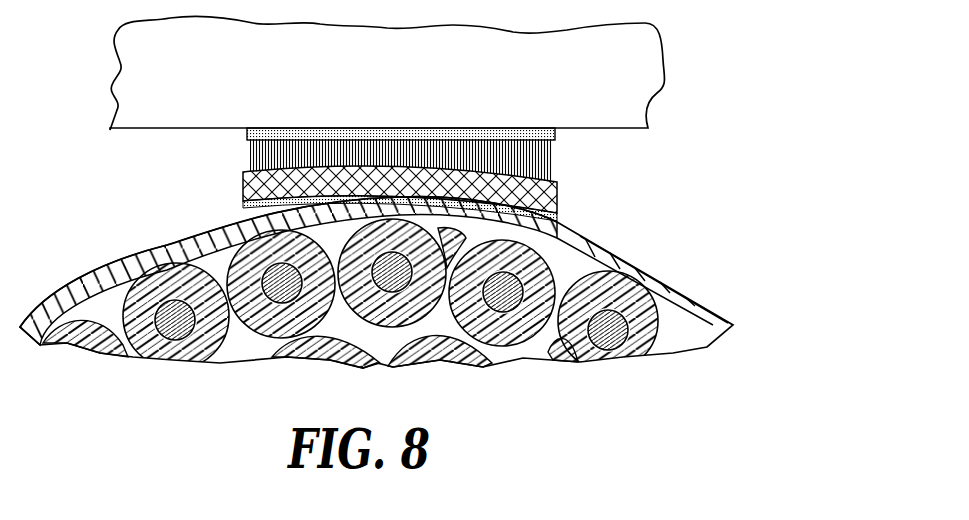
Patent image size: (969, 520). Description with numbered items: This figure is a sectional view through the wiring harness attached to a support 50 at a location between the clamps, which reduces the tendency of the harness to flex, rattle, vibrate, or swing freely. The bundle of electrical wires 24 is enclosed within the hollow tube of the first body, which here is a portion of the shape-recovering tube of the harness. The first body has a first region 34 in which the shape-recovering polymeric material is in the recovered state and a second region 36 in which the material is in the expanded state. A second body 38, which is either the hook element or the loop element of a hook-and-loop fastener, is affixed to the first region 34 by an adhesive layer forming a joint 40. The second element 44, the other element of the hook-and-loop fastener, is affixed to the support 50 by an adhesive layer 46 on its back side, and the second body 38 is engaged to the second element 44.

The support 50 is at (140, 43).
The adhesive layer 46 is at (247, 134).
The second element 44 is at (250, 160).
The second body 38 is at (558, 199).
The joint 40 is at (245, 206).
The second region 36 is at (77, 285).
The first region 34 is at (458, 232).
The electrical wires 24 is at (577, 360).